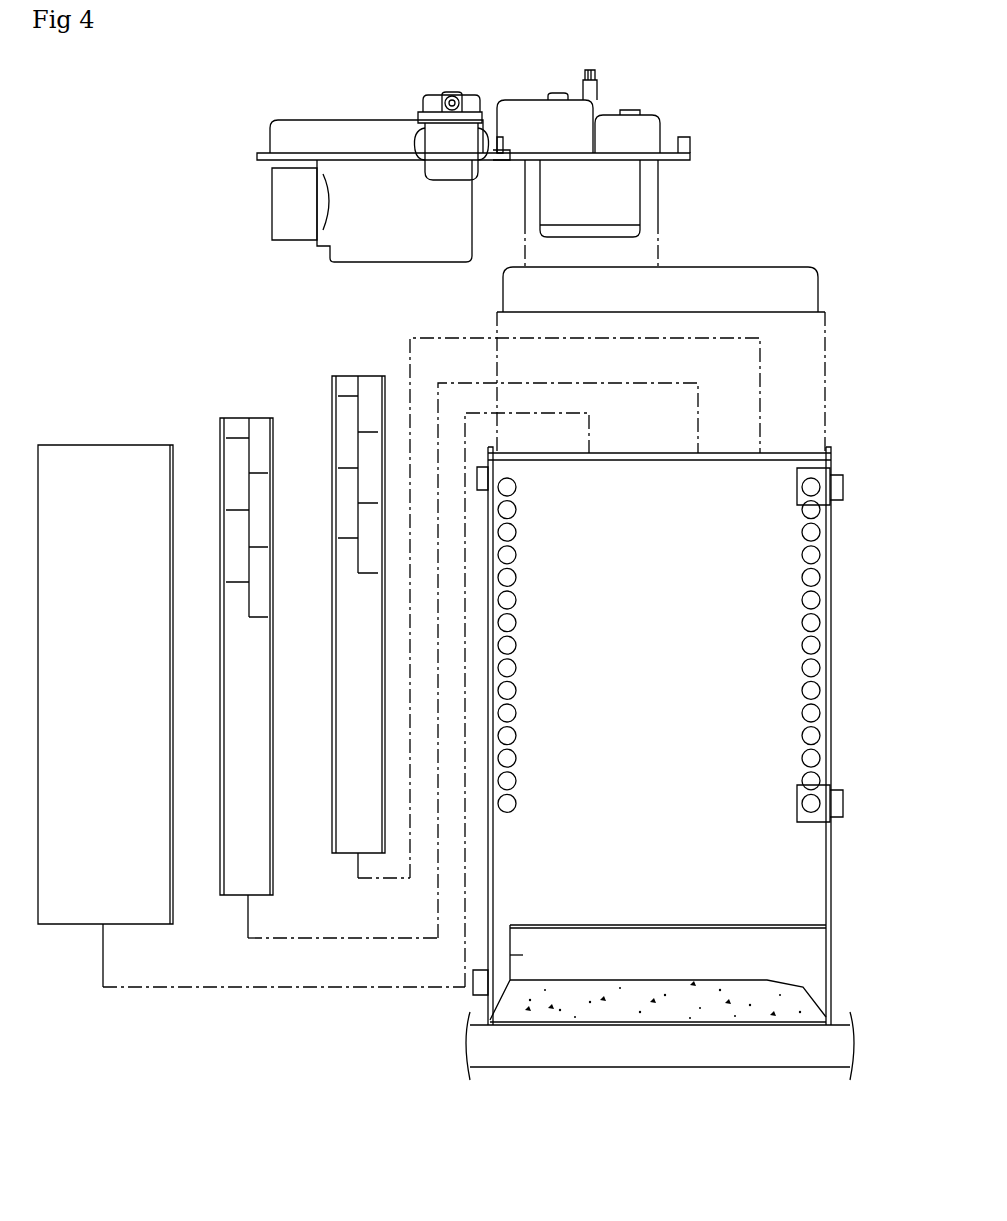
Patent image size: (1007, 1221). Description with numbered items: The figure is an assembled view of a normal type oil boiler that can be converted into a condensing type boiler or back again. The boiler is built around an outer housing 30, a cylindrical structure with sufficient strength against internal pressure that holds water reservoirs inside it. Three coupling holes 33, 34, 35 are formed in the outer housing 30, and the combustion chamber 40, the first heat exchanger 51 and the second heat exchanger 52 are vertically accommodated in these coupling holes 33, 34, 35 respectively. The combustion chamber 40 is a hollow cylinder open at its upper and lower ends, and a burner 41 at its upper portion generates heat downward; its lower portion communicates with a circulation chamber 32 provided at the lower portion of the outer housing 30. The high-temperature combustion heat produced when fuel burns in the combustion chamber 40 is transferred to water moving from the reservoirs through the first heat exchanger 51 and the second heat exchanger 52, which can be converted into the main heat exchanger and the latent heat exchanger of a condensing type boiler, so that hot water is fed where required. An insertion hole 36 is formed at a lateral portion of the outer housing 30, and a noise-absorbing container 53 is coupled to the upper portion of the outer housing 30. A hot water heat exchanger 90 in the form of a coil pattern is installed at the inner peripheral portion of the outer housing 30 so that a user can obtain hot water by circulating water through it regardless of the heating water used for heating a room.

The outer housing 30 is at (493, 838).
The circulation chamber 32 is at (510, 955).
The coupling hole 33 is at (618, 453).
The coupling hole 34 is at (705, 453).
The coupling hole 35 is at (771, 453).
The insertion hole 36 is at (826, 955).
The combustion chamber 40 is at (173, 445).
The burner 41 is at (623, 212).
The first heat exchanger 51 is at (273, 418).
The second heat exchanger 52 is at (332, 400).
The noise-absorbing container 53 is at (742, 267).
The hot water heat exchanger 90 is at (805, 490).